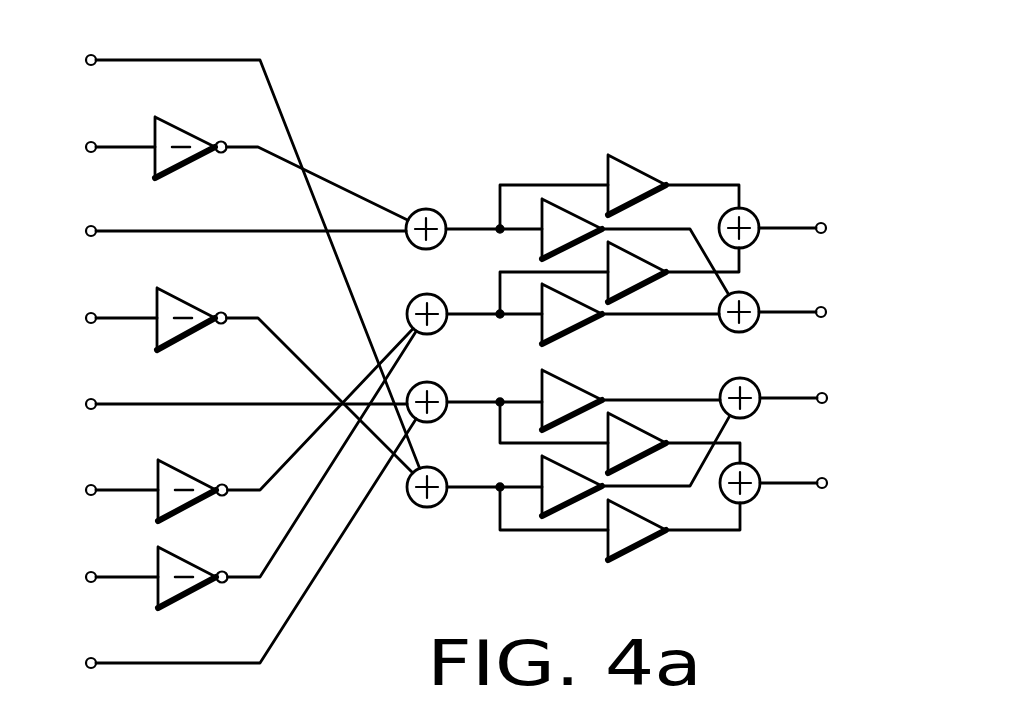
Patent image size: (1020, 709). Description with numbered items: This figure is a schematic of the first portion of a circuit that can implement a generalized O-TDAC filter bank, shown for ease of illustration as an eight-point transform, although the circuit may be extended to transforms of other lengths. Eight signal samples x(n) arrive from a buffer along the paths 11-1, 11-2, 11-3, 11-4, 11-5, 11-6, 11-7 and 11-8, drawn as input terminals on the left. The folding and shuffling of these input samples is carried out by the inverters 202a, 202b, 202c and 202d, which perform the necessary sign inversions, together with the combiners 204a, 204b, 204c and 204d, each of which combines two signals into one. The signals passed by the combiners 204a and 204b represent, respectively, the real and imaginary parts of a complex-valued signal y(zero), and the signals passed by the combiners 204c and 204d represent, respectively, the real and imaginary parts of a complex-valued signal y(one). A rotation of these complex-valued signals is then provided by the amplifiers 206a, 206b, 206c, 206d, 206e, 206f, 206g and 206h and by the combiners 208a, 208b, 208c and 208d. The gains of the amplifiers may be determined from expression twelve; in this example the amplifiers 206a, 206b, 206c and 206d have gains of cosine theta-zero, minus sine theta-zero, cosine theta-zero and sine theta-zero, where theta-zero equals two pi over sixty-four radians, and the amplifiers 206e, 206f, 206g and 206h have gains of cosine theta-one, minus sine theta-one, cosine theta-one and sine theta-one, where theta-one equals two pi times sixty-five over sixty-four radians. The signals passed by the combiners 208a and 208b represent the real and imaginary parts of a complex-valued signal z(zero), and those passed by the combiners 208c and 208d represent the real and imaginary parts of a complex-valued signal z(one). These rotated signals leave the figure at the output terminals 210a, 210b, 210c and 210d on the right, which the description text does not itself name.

The path 11-1 is at (142, 58).
The path 11-2 is at (142, 145).
The path 11-3 is at (142, 229).
The path 11-4 is at (142, 316).
The path 11-5 is at (142, 402).
The path 11-6 is at (142, 488).
The path 11-7 is at (142, 575).
The path 11-8 is at (142, 661).
The inverter 202a is at (195, 110).
The inverter 202b is at (184, 297).
The inverter 202c is at (196, 450).
The inverter 202d is at (184, 602).
The combiner 204a is at (428, 208).
The combiner 204b is at (416, 300).
The combiner 204c is at (430, 420).
The combiner 204d is at (428, 508).
The amplifier 206a is at (637, 165).
The amplifier 206b is at (562, 196).
The amplifier 206c is at (633, 292).
The amplifier 206d is at (542, 343).
The amplifier 206e is at (542, 382).
The amplifier 206f is at (625, 413).
The amplifier 206g is at (560, 513).
The amplifier 206h is at (640, 556).
The combiner 208a is at (757, 209).
The combiner 208b is at (757, 294).
The combiner 208c is at (750, 380).
The combiner 208d is at (750, 465).
The output terminal 210a is at (783, 222).
The output terminal 210b is at (783, 306).
The output terminal 210c is at (783, 393).
The output terminal 210d is at (783, 478).